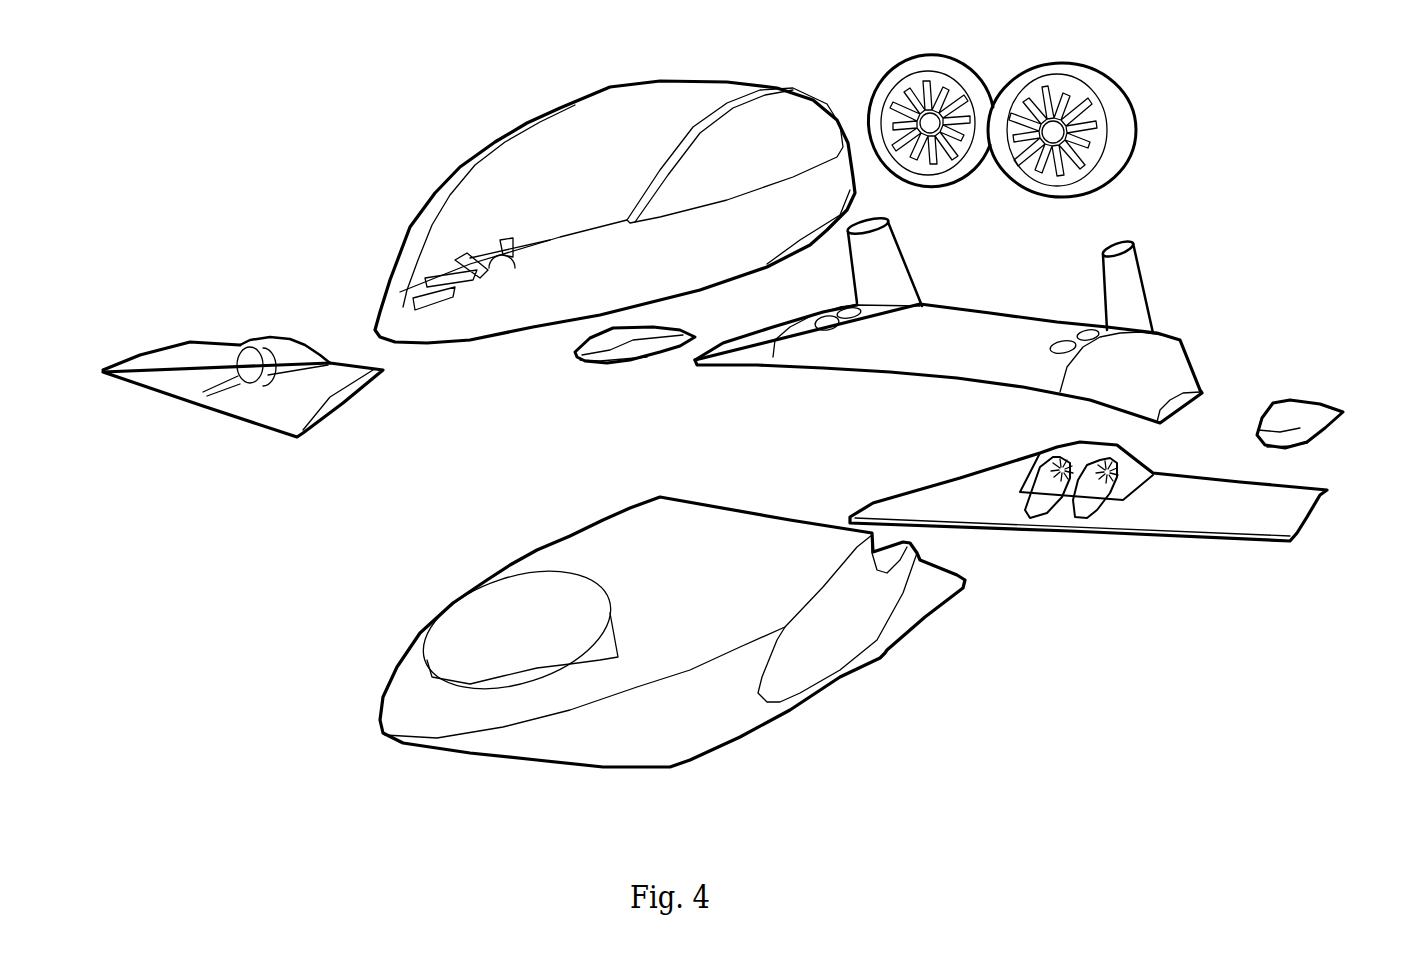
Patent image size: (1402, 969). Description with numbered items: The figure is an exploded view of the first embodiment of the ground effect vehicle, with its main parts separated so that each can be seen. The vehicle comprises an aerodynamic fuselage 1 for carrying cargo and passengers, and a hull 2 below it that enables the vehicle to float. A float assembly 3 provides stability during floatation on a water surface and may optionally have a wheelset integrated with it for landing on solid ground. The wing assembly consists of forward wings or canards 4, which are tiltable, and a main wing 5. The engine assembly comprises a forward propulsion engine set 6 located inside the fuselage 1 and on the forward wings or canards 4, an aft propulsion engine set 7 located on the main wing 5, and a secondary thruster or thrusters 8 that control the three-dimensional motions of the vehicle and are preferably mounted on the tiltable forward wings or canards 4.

The fuselage 1 is at (571, 151).
The hull 2 is at (706, 706).
The float assembly 3 is at (589, 361).
The forward wings/canards 4 is at (177, 378).
The main wing 5 is at (1050, 389).
The forward propulsion engine set 6 is at (1037, 480).
The aft propulsion engine set 7 is at (982, 59).
The secondary thruster 8 is at (1082, 343).